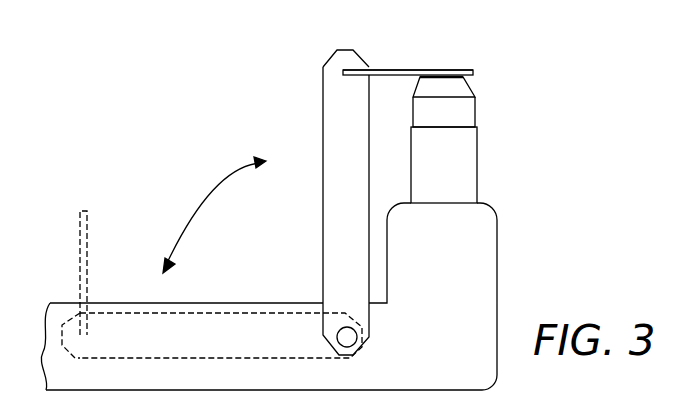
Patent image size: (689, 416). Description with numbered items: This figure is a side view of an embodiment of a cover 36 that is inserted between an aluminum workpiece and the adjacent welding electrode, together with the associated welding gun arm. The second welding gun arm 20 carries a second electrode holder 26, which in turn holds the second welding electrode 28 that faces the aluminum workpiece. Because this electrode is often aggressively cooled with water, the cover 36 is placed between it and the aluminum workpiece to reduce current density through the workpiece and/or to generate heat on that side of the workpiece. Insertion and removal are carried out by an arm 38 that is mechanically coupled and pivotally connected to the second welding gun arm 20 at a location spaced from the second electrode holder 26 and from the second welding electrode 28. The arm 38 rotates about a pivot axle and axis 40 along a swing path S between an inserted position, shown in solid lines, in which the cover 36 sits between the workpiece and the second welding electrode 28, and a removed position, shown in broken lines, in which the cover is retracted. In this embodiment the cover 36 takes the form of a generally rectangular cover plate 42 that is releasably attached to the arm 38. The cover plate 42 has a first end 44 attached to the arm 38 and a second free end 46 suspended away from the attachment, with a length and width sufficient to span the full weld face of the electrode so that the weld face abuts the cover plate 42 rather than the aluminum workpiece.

The second welding gun arm 20 is at (497, 253).
The second electrode holder 26 is at (477, 163).
The second welding electrode 28 is at (478, 100).
The cover 36 is at (433, 67).
The arm 38 is at (323, 200).
The pivot axle and axis 40 is at (349, 338).
The cover plate 42 is at (387, 69).
The first end 44 is at (336, 55).
The second free end 46 is at (472, 73).
The swing path S is at (203, 202).